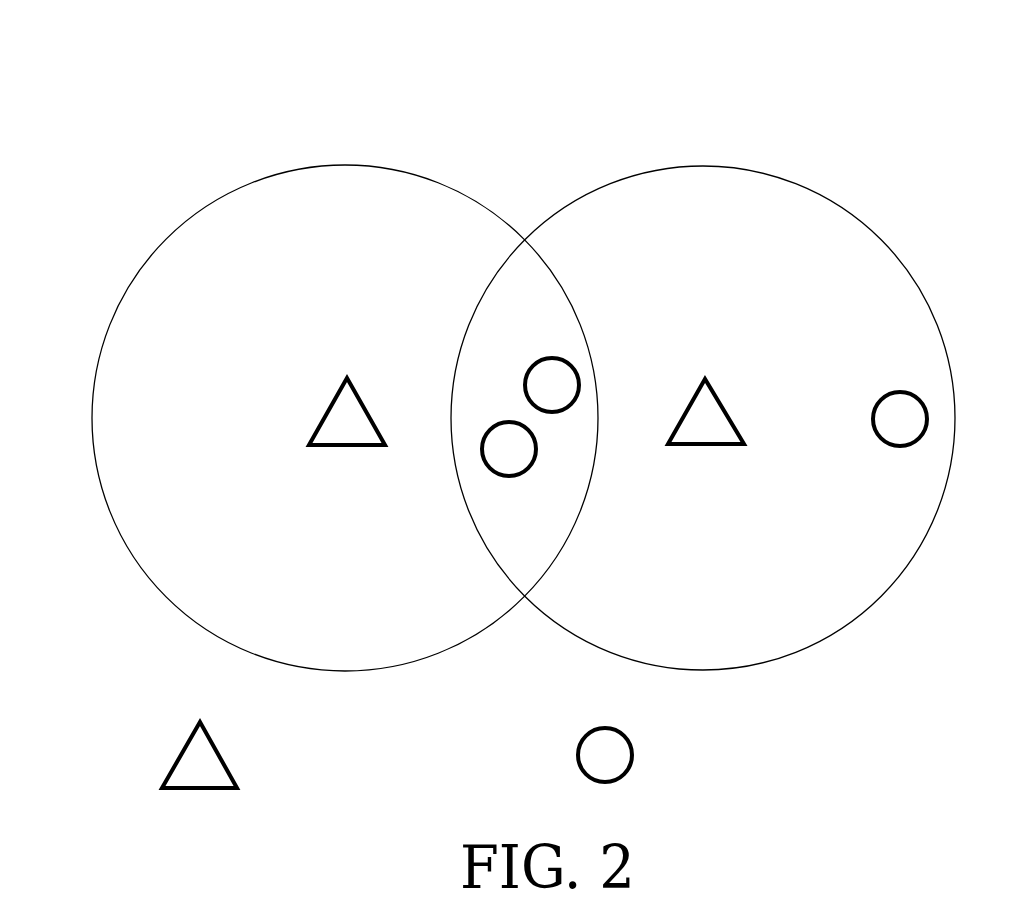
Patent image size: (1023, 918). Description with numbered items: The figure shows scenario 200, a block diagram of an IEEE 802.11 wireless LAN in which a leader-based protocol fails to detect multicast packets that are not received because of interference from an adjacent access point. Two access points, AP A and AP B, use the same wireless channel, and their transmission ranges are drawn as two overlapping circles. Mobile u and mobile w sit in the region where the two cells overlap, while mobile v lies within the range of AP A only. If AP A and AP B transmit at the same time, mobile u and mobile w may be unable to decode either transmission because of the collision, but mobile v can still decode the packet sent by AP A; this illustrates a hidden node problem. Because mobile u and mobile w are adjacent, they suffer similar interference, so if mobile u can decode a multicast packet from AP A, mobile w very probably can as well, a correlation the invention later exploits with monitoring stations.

The scenario 200 is at (80, 54).
The AP A is at (706, 411).
The AP B is at (347, 411).
The mobile U u is at (509, 449).
The mobile V v is at (900, 419).
The mobile W w is at (552, 385).